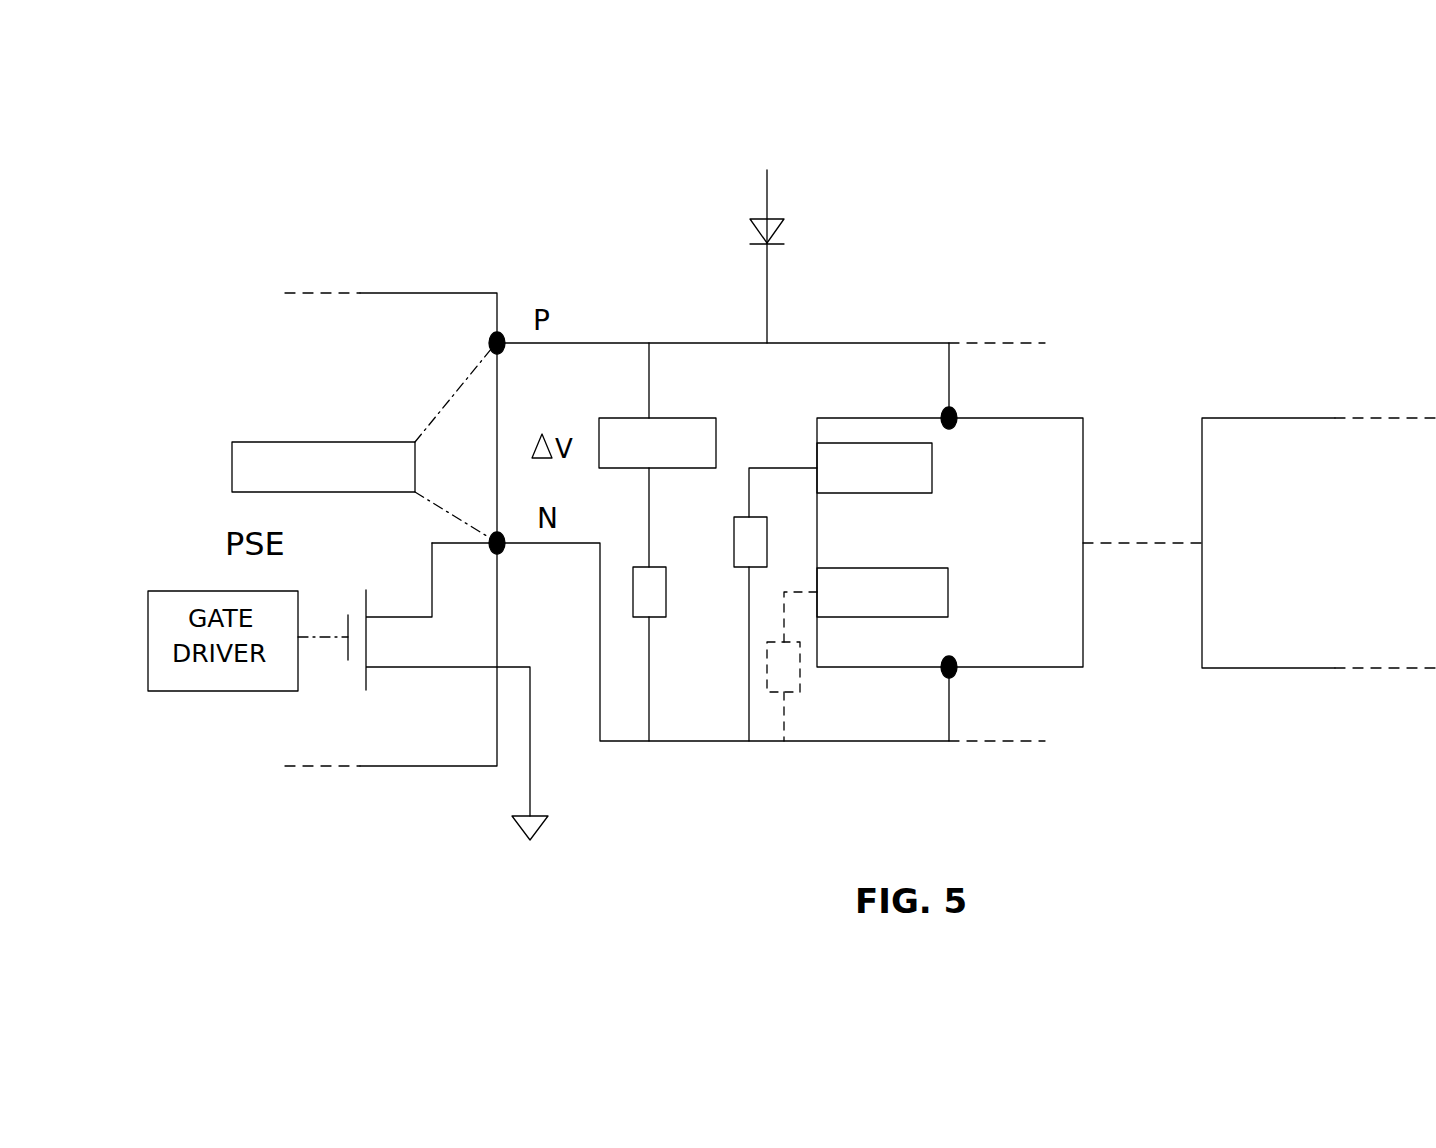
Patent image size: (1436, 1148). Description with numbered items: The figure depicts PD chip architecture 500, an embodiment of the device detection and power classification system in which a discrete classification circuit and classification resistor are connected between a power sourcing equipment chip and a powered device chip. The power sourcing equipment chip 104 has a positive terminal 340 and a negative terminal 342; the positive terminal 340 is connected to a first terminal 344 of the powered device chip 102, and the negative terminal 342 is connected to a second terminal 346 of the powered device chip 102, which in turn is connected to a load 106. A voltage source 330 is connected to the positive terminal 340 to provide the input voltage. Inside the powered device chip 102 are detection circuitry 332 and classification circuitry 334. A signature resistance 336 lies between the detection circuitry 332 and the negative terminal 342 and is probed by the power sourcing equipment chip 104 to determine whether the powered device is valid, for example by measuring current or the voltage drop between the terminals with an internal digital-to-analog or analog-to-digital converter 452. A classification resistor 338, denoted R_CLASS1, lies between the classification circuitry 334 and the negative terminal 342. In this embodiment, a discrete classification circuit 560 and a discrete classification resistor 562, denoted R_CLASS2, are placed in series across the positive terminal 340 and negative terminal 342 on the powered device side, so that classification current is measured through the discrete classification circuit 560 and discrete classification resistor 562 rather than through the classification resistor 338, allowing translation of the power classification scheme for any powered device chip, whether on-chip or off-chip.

The PD chip architecture 500 is at (1322, 143).
The power sourcing equipment chip 104 is at (403, 293).
The powered device chip 102 is at (984, 544).
The load 106 is at (1300, 418).
The voltage source 330 is at (782, 158).
The detection circuitry 332 is at (880, 493).
The classification circuitry 334 is at (948, 592).
The signature resistance 336 is at (735, 515).
The classification resistor 338 is at (806, 684).
The positive terminal 340 is at (502, 350).
The negative terminal 342 is at (504, 552).
The first terminal 344 is at (949, 430).
The second terminal 346 is at (953, 673).
The digital-to-analog converter / analog-to-digital converter 452 is at (232, 468).
The discrete classification circuit 560 is at (645, 418).
The discrete classification resistor 562 is at (631, 617).